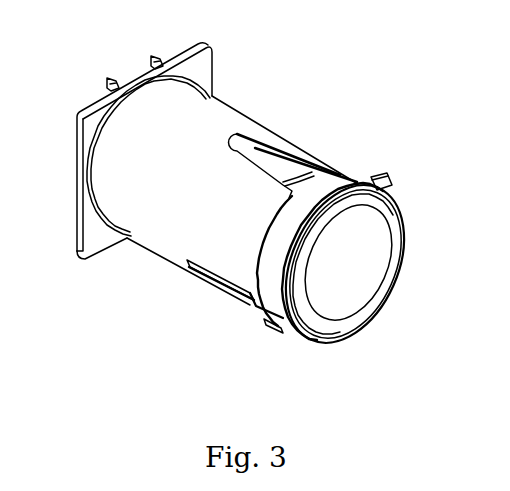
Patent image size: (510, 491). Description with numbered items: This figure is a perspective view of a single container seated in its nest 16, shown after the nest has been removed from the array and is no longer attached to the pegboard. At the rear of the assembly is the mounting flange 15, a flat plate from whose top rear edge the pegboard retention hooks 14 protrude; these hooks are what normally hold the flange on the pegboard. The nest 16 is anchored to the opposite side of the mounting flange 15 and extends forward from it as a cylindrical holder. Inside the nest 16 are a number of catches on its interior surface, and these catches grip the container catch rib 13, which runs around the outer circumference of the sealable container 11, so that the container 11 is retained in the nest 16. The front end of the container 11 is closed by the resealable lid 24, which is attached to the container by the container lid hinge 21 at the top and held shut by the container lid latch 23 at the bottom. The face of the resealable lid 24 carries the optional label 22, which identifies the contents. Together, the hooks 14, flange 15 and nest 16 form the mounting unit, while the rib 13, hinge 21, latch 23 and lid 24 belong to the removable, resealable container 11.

The sealable container 11 is at (258, 155).
The container catch rib 13 is at (297, 154).
The pegboard retention hooks 14 is at (151, 54).
The mounting flange 15 is at (95, 122).
The nest 16 is at (213, 112).
The container lid hinge 21 is at (390, 173).
The label 22 is at (368, 276).
The container lid latch 23 is at (277, 329).
The resealable lid 24 is at (338, 327).